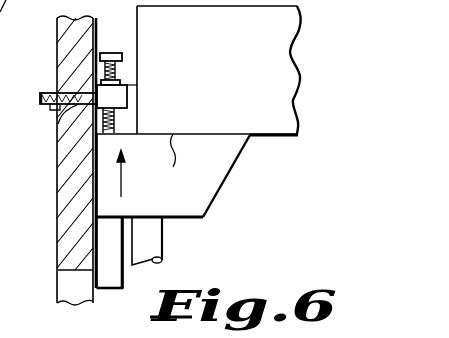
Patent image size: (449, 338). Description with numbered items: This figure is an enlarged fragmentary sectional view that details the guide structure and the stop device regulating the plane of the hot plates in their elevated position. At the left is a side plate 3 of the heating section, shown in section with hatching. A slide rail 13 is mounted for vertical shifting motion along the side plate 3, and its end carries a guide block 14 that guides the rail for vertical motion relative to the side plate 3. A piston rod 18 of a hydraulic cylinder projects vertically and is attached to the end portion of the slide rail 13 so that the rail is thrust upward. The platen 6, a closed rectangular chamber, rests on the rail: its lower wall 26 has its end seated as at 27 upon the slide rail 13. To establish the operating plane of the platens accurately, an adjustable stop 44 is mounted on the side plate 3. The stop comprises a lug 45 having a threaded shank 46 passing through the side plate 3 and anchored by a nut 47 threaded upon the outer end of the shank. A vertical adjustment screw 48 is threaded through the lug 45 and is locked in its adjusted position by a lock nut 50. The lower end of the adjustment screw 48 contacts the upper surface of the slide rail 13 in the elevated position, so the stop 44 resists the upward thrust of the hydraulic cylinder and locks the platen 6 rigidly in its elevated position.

The side plate 3 is at (73, 203).
The platen 6 is at (260, 80).
The slide rail 13 is at (205, 170).
The guide block 14 is at (108, 278).
The piston rod 18 is at (150, 236).
The lower wall 26 is at (285, 138).
The seat 27 is at (143, 175).
The adjustable stop 44 is at (127, 86).
The lug 45 is at (117, 98).
The threaded shank 46 is at (70, 106).
The nut 47 is at (49, 90).
The vertical adjustment screw 48 is at (109, 52).
The lock nut 50 is at (129, 79).